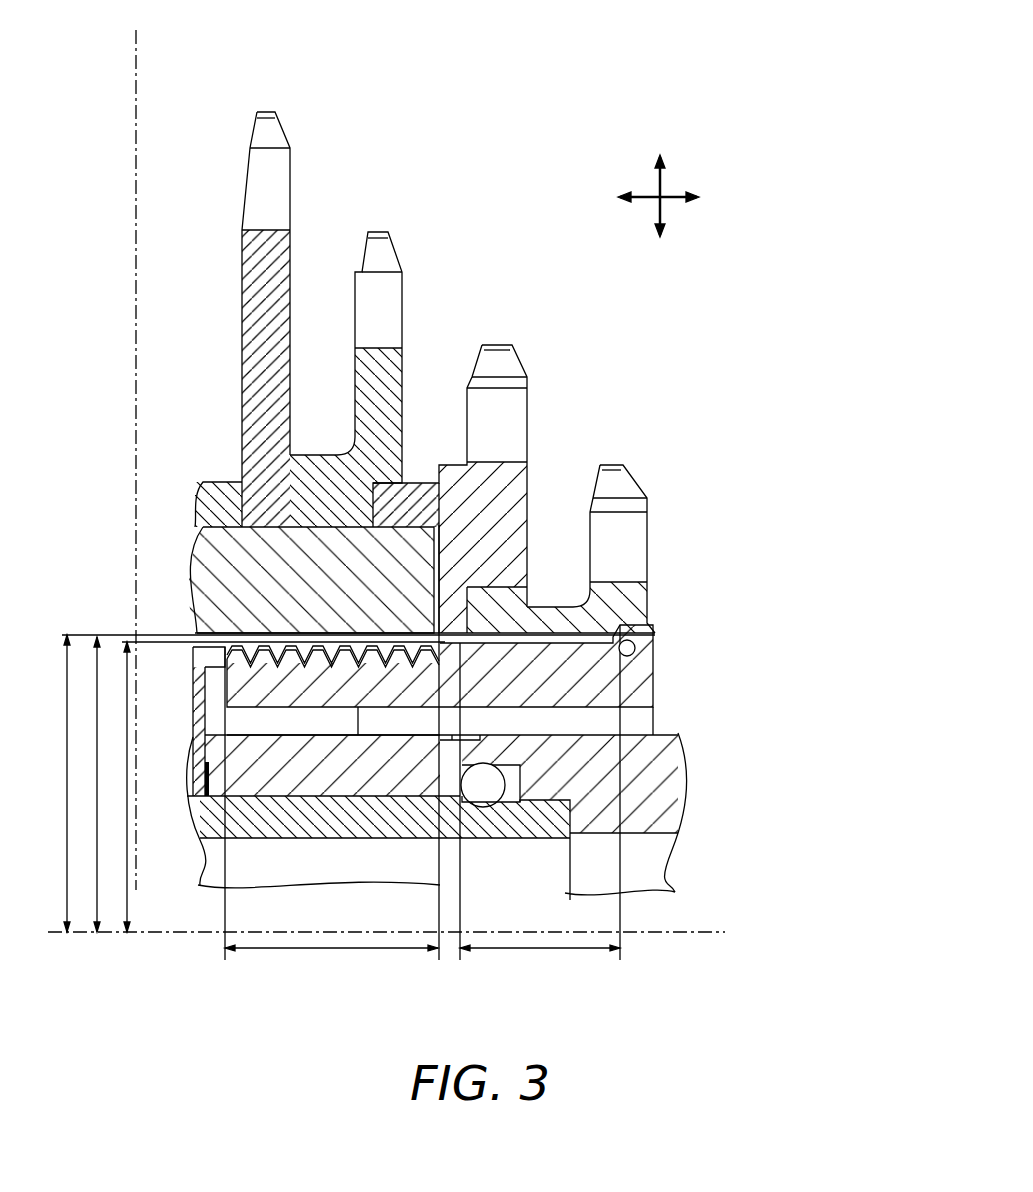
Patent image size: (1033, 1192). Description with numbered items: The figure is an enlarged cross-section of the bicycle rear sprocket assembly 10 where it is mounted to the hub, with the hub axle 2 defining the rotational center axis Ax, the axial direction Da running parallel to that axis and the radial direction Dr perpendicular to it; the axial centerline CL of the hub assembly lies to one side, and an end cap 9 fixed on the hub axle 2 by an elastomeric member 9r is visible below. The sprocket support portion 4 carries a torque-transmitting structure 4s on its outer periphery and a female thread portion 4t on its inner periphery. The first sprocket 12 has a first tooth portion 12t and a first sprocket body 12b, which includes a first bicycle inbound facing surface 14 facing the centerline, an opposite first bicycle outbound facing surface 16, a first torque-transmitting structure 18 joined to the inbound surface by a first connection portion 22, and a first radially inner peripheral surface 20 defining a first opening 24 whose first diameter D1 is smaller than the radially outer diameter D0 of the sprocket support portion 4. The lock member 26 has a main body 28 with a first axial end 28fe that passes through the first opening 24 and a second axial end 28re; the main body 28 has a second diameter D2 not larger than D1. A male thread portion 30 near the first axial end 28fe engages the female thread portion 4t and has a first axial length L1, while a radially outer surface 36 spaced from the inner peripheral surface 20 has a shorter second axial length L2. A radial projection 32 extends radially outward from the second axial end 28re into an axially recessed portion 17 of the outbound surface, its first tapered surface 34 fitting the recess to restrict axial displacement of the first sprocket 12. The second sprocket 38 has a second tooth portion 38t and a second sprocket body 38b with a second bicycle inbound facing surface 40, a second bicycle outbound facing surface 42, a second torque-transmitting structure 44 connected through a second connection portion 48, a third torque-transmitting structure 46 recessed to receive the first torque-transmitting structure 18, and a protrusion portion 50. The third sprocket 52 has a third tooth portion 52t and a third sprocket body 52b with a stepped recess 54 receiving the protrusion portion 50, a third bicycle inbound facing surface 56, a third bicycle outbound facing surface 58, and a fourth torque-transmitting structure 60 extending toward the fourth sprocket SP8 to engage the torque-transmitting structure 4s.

The hub axle 2 is at (208, 818).
The sprocket support portion 4 is at (215, 551).
The torque-transmitting structure 4s is at (222, 512).
The female thread portion 4t is at (225, 705).
The end cap 9 is at (655, 822).
The elastomeric member 9r is at (485, 785).
The bicycle rear sprocket assembly 10 is at (731, 329).
The first sprocket 12 is at (769, 615).
The first tooth portion 12t is at (612, 472).
The first sprocket body 12b is at (733, 475).
The first bicycle inbound facing surface 14 is at (632, 478).
The first bicycle outbound facing surface 16 is at (648, 514).
The axially recessed portion 17 is at (640, 632).
The first torque-transmitting structure 18 is at (622, 527).
The first radially inner peripheral surface 20 is at (560, 632).
The first connection portion 22 is at (540, 605).
The first opening 24 is at (570, 600).
The lock member 26 is at (806, 620).
The main body 28 is at (655, 706).
The second axial end 28re is at (657, 718).
The first axial end 28fe is at (206, 762).
The male thread portion 30 is at (587, 690).
The radial projection 32 is at (655, 640).
The first tapered surface 34 is at (465, 645).
The radially outer surface 36 is at (655, 683).
The second sprocket 38 is at (628, 335).
The second tooth portion 38t is at (512, 350).
The second sprocket body 38b is at (581, 350).
The second bicycle inbound facing surface 40 is at (492, 352).
The second bicycle outbound facing surface 42 is at (505, 397).
The second torque-transmitting structure 44 is at (452, 525).
The third torque-transmitting structure 46 is at (505, 600).
The second connection portion 48 is at (490, 578).
The protrusion portion 50 is at (450, 430).
The third sprocket 52 is at (486, 160).
The third tooth portion 52t is at (376, 252).
The third sprocket body 52b is at (530, 196).
The stepped recess 54 is at (303, 543).
The third bicycle inbound facing surface 56 is at (345, 310).
The third bicycle outbound facing surface 58 is at (402, 298).
The fourth torque-transmitting structure 60 is at (367, 503).
The fourth sprocket SP8 is at (276, 118).
The axial centerline CL is at (136, 60).
The rotational center axis Ax is at (708, 930).
The radial direction Dr is at (657, 180).
The axial direction Da is at (676, 193).
The radially outer diameter D0 is at (348, 783).
The first diameter D1 is at (86, 784).
The second diameter D2 is at (274, 787).
The first axial length L1 is at (332, 753).
The second axial length L2 is at (540, 803).